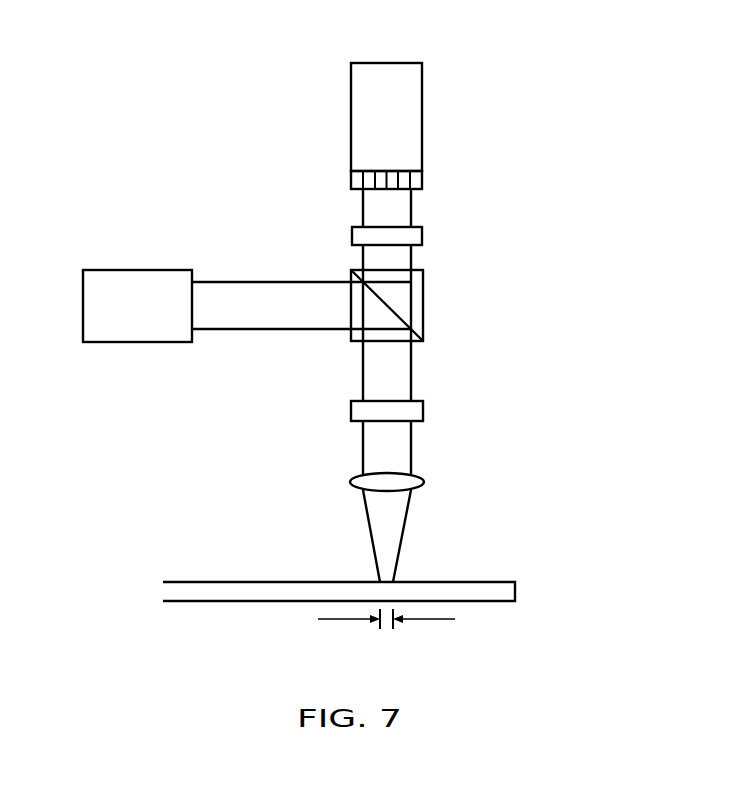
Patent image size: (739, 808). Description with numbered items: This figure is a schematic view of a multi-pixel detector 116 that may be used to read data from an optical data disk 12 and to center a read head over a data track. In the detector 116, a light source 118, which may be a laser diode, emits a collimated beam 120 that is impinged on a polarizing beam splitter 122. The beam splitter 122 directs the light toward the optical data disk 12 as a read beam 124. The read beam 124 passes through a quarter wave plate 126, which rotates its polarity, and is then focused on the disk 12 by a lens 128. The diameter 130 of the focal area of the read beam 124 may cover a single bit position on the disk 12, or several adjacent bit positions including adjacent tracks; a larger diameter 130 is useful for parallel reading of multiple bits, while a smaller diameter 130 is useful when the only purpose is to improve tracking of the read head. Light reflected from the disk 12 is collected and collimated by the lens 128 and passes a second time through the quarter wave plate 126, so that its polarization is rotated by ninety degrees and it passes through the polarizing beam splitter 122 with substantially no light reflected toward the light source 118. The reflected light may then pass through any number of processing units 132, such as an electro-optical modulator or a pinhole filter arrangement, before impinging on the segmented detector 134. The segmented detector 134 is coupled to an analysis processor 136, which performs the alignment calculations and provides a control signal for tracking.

The multi-pixel detector 116 is at (153, 103).
The light source 118 is at (171, 270).
The collimated beam 120 is at (247, 282).
The polarizing beam splitter 122 is at (423, 302).
The read beam 124 is at (363, 368).
The quarter wave plate 126 is at (423, 410).
The lens 128 is at (423, 482).
The diameter 130 is at (393, 628).
The processing units 132 is at (350, 238).
The segmented detector 134 is at (423, 182).
The analysis processor 136 is at (423, 98).
The optical data disk 12 is at (482, 582).